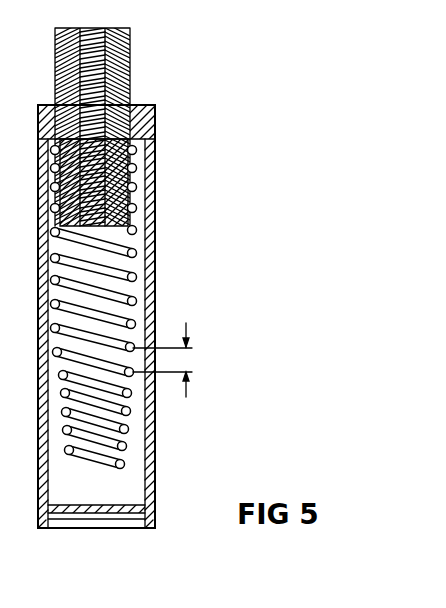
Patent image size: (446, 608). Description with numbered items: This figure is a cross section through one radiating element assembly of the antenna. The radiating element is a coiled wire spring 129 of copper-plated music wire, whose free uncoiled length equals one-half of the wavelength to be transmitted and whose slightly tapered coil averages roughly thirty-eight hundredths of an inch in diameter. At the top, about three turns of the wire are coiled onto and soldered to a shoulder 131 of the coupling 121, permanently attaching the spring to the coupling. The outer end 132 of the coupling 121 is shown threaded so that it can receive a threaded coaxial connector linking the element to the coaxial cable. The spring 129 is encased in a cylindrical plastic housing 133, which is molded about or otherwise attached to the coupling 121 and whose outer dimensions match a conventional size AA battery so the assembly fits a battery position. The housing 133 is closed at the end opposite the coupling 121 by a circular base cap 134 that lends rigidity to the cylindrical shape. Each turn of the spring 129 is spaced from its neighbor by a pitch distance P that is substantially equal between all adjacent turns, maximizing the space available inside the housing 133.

The coupling 121 is at (148, 126).
The coiled wire spring 129 is at (130, 278).
The shoulder 131 is at (135, 218).
The outer end 132 is at (128, 42).
The cylindrical plastic housing 133 is at (155, 433).
The base cap 134 is at (113, 519).
The pitch distance P is at (162, 360).